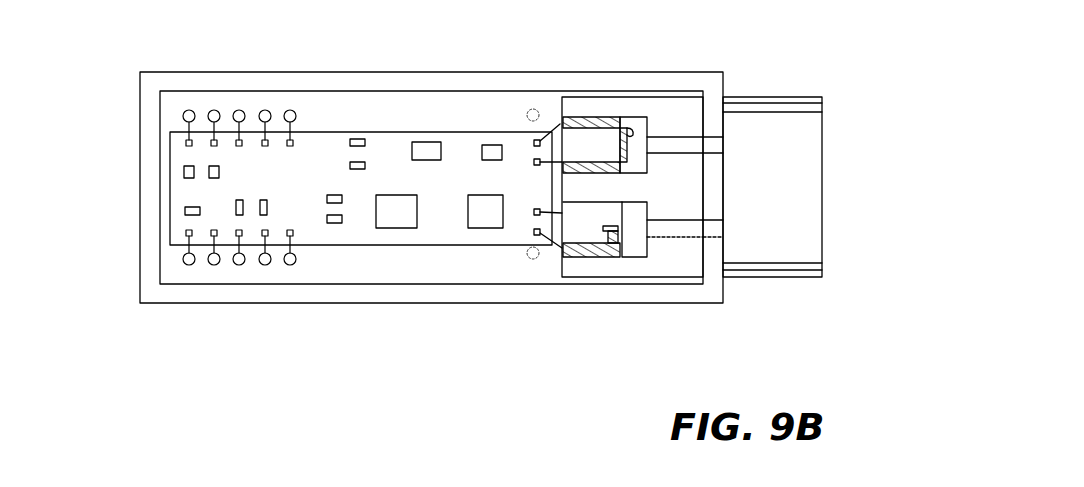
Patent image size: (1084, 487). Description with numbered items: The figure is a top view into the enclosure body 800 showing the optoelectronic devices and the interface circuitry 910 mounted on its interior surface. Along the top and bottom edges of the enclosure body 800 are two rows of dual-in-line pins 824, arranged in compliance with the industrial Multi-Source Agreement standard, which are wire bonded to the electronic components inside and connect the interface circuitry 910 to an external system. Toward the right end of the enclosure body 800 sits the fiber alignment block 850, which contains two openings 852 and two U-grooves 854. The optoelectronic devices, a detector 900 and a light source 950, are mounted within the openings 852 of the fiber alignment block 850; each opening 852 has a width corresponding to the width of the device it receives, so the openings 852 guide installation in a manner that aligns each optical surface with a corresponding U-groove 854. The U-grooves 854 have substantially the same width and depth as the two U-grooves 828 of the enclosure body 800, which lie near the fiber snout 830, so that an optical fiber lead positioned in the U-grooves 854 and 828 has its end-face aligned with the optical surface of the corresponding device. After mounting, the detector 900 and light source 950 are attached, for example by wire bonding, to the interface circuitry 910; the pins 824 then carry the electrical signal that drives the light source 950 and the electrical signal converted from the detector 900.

The enclosure body 800 is at (140, 110).
The pins 824 is at (193, 111).
The interface circuitry 910 is at (402, 133).
The optoelectronic device (detector) 900 is at (580, 143).
The optoelectronic device (light source) 950 is at (583, 227).
The fiber alignment block 850 is at (628, 100).
The opening 852 is at (633, 120).
The U-groove 854 is at (684, 219).
The U-grooves 828 is at (718, 143).
The fiber snout 830 is at (808, 278).